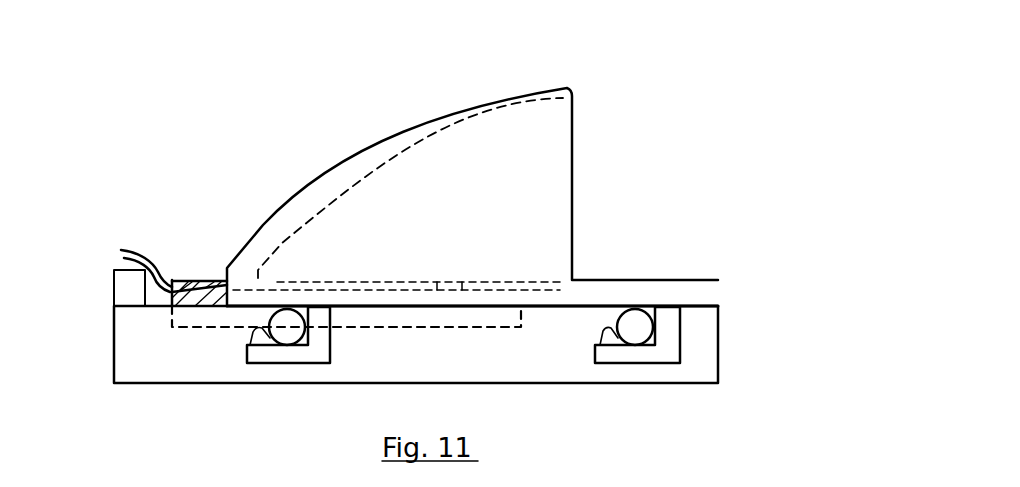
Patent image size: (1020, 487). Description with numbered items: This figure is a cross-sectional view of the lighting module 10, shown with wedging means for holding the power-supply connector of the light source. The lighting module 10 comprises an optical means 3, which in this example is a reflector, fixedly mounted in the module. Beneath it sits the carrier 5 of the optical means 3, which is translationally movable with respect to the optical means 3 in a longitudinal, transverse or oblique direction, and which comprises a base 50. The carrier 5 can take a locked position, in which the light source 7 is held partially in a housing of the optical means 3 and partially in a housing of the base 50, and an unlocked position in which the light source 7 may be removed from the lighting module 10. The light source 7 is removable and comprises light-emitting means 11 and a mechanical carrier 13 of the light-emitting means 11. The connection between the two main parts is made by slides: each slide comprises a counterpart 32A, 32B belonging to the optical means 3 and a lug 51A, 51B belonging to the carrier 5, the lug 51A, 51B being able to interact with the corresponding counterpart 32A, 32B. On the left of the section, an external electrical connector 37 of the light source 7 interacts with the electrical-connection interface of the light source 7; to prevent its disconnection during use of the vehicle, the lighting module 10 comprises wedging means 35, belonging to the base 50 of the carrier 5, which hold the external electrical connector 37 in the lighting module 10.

The lighting module 10 is at (272, 104).
The optical means 3 is at (455, 108).
The base 50 is at (177, 365).
The carrier 5 is at (725, 310).
The light source 7 is at (638, 155).
The light-emitting means 11 is at (462, 282).
The mechanical carrier 13 is at (520, 303).
The wedging means 35 is at (130, 288).
The external electrical connector 37 is at (203, 279).
The lug 51A is at (635, 320).
The lug 51B is at (284, 322).
The counterpart 32A is at (620, 367).
The counterpart 32B is at (288, 355).